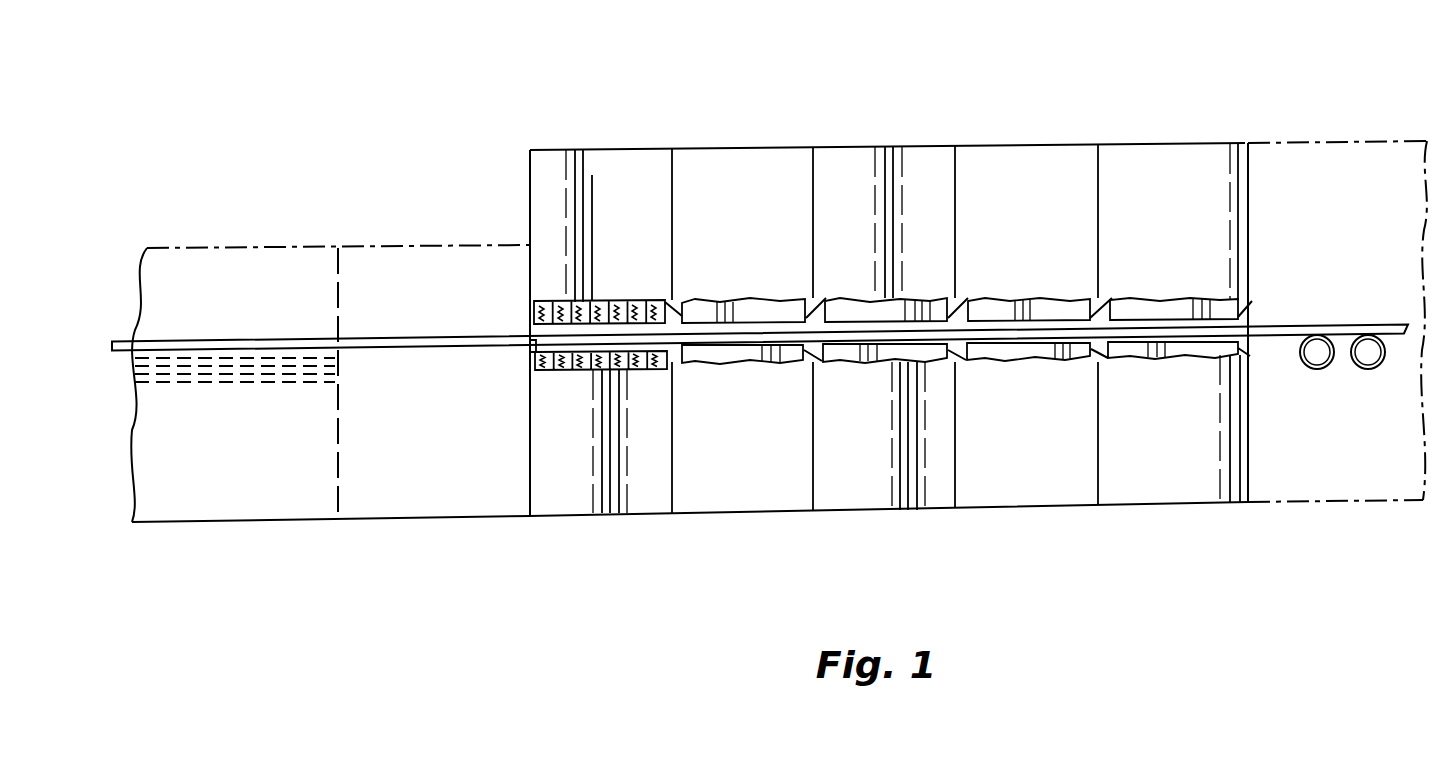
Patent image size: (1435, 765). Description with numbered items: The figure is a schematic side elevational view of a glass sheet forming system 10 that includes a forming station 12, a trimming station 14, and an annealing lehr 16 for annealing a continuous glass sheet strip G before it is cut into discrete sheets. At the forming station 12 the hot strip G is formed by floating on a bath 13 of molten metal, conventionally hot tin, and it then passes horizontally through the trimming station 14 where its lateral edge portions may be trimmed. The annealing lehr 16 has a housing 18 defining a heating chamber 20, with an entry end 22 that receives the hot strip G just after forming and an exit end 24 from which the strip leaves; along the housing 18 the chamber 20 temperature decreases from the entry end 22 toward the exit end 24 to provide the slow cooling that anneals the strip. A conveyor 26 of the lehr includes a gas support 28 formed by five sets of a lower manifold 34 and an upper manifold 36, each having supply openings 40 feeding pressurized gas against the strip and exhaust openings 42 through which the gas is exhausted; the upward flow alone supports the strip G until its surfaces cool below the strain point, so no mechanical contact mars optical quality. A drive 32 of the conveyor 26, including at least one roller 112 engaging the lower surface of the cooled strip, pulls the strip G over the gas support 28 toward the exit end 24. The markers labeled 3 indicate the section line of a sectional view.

The glass sheet forming system 10 is at (500, 87).
The section line 3- 3 is at (662, 85).
The forming station 12 is at (185, 244).
The bath of molten metal 13 is at (287, 360).
The trimming station 14 is at (382, 244).
The glass sheet strip G is at (215, 341).
The entry end 22 is at (527, 246).
The annealing lehr 16 is at (810, 115).
The housing 18 is at (858, 146).
The exit end 24 is at (1248, 222).
The heating chamber 20 is at (718, 328).
The conveyor 26 is at (527, 353).
The gas support 28 is at (753, 345).
The upper manifold 36 is at (822, 303).
The lower manifold 34 is at (680, 360).
The supply openings 40 is at (537, 312).
The exhaust openings 42 is at (535, 302).
The roller 112 is at (1330, 364).
The drive 32 is at (1394, 352).